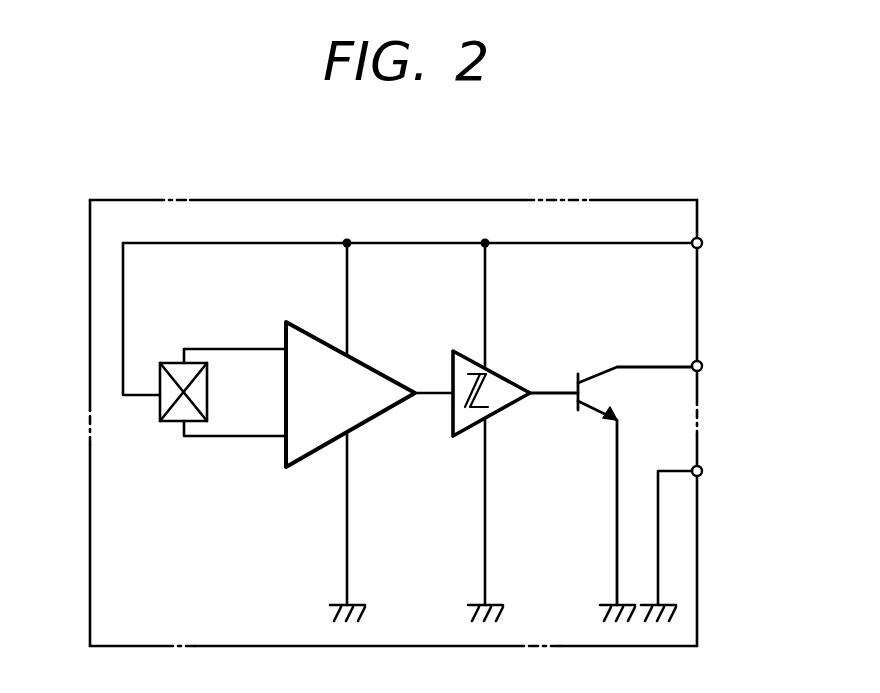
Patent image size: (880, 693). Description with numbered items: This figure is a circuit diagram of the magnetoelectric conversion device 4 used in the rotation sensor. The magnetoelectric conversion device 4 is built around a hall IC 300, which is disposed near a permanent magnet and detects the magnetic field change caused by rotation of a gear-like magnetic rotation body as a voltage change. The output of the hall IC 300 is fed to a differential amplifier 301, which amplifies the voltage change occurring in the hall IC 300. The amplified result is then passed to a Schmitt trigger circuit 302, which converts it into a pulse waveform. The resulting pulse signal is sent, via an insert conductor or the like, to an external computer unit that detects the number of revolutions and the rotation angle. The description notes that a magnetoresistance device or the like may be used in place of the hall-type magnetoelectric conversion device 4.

The magnetoelectric conversion device 4 is at (615, 200).
The hall IC 300 is at (166, 425).
The differential amplifier 301 is at (295, 468).
The Schmitt trigger circuit 302 is at (461, 350).